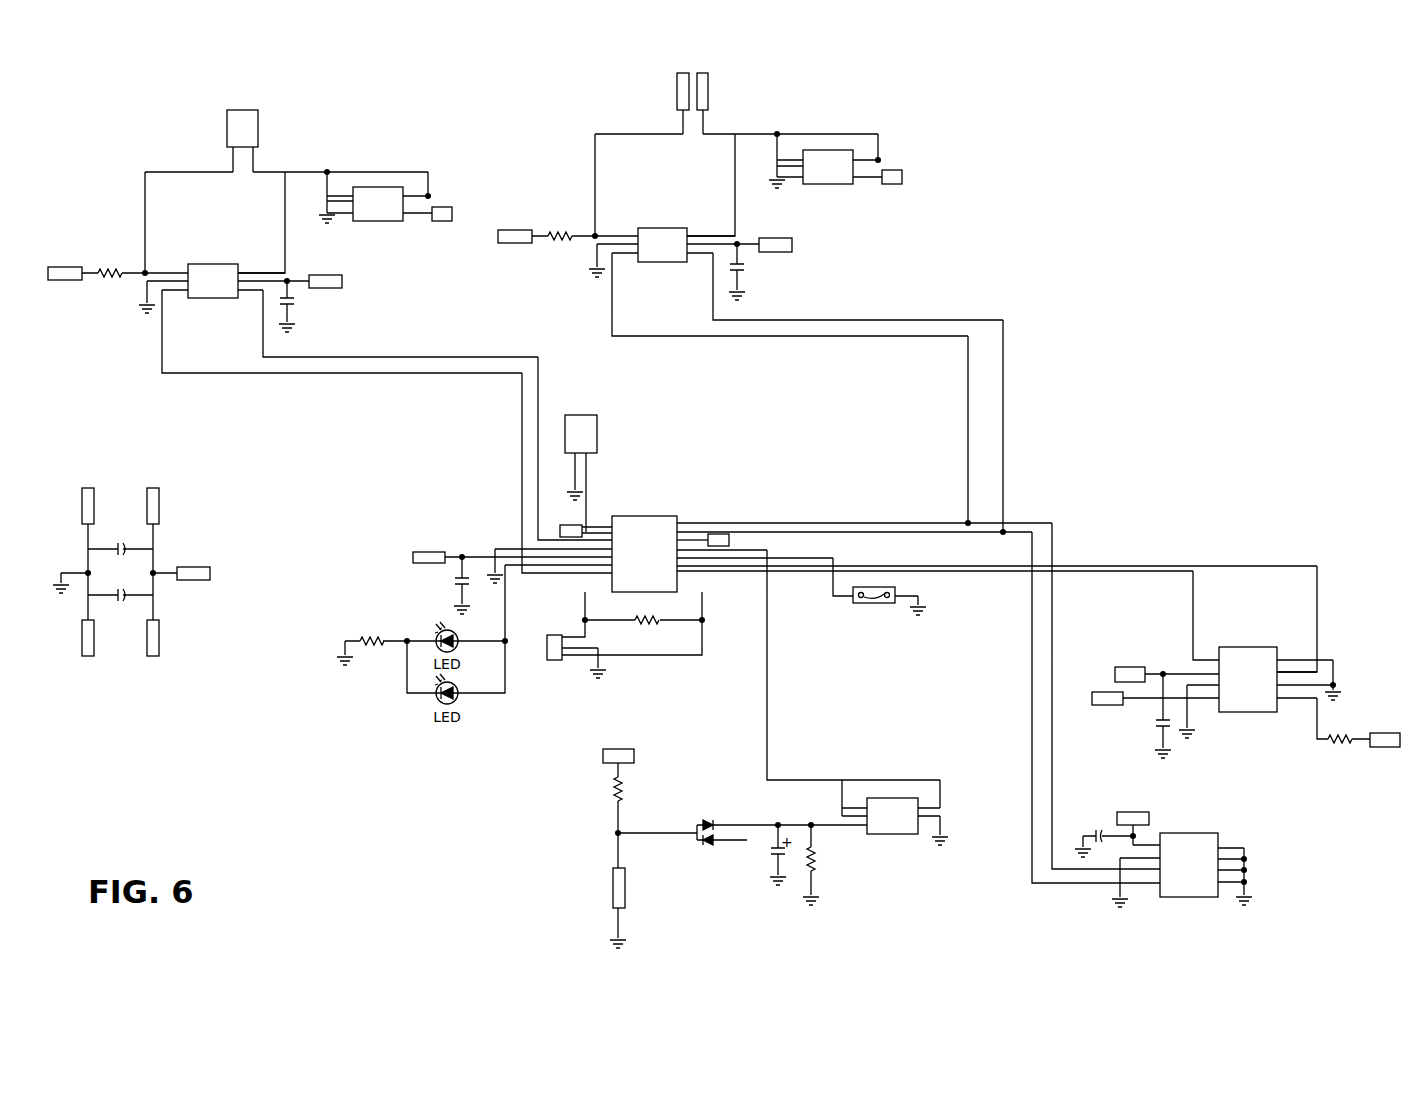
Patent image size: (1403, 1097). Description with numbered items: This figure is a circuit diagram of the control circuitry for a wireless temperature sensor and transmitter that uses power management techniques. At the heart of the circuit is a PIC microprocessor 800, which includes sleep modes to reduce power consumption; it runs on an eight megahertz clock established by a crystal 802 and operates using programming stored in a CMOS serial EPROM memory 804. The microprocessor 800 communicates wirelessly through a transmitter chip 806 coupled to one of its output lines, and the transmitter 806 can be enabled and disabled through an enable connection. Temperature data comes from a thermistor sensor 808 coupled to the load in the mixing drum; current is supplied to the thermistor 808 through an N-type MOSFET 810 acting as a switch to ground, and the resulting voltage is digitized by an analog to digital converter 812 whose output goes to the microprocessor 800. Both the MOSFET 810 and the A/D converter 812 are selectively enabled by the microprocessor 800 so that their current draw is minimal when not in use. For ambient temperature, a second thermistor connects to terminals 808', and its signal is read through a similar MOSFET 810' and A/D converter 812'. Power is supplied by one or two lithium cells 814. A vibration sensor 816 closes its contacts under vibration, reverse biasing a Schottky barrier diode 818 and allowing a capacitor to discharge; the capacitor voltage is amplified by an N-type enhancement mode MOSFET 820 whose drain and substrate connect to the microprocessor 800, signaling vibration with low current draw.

The PIC microprocessor 800 is at (645, 516).
The crystal 802 is at (553, 660).
The CMOS serial EPROM memory 804 is at (1193, 833).
The transmitter chip 806 is at (1250, 647).
The thermistor sensor 808 is at (246, 141).
The terminals 808' is at (673, 103).
The N-type MOSFET 810 is at (385, 220).
The MOSFET 810' is at (835, 183).
The analog to digital converter 812 is at (195, 273).
The A/D converter 812' is at (645, 239).
The lithium cells 814 is at (133, 558).
The vibration sensor 816 is at (607, 892).
The Schottky barrier diode 818 is at (690, 840).
The N-type enhancement mode MOSFET 820 is at (893, 834).